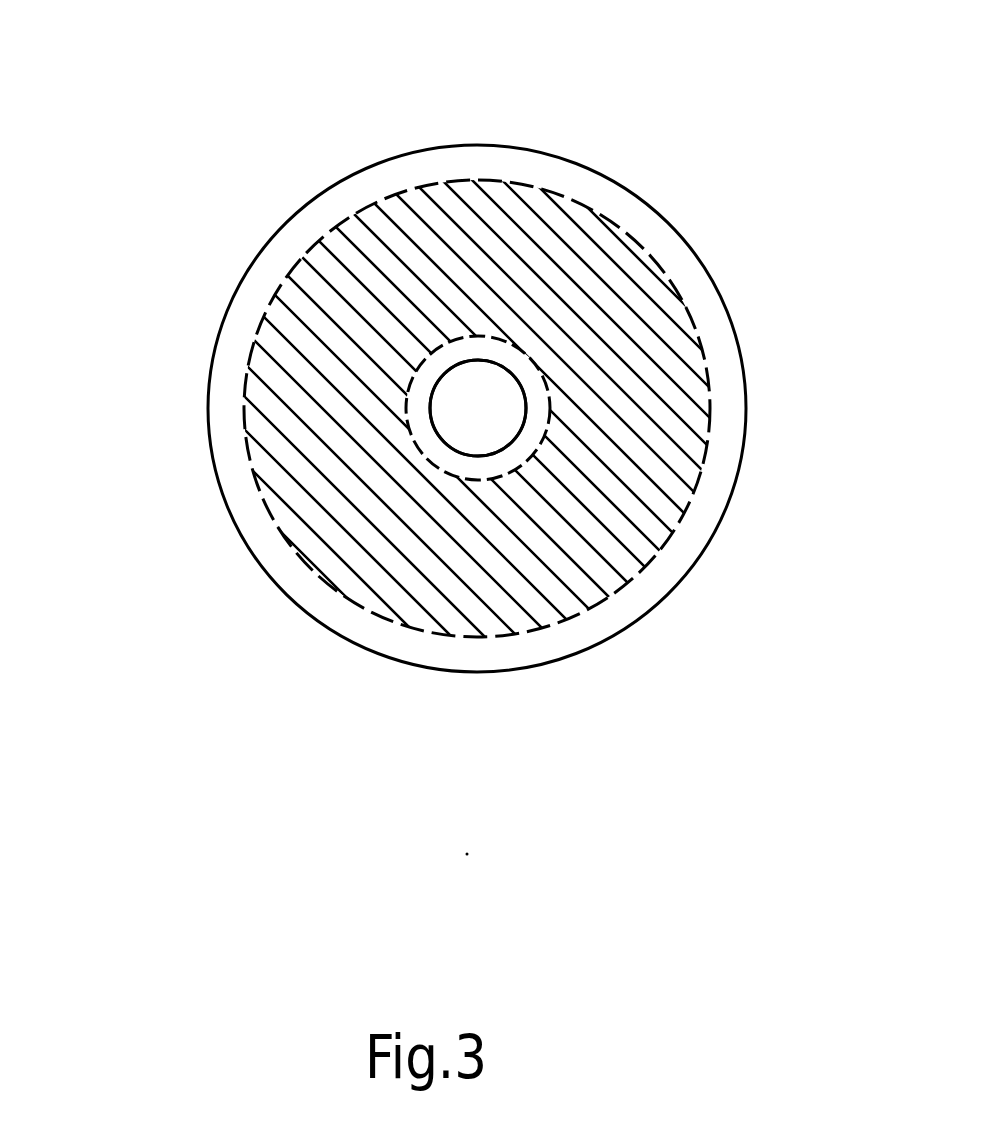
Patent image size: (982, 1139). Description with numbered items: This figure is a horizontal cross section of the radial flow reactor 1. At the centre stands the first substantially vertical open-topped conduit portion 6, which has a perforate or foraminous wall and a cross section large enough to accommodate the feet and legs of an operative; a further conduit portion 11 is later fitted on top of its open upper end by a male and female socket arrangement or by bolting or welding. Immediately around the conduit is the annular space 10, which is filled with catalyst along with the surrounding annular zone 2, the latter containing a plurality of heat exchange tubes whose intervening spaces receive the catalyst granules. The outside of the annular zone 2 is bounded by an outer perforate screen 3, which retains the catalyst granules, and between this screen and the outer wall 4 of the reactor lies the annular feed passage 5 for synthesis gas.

The radial flow reactor 1 is at (498, 145).
The annular zone 2 is at (548, 272).
The outer perforate screen 3 is at (710, 392).
The outer wall 4 is at (673, 590).
The annular feed passage 5 is at (675, 557).
The annular space 10 is at (421, 364).
The first conduit portion 6 is at (430, 414).
The further conduit portion 11 is at (478, 408).